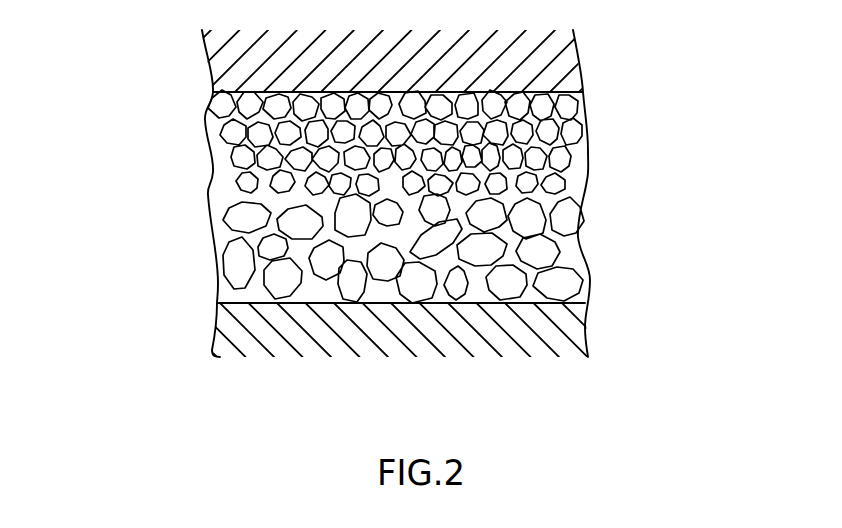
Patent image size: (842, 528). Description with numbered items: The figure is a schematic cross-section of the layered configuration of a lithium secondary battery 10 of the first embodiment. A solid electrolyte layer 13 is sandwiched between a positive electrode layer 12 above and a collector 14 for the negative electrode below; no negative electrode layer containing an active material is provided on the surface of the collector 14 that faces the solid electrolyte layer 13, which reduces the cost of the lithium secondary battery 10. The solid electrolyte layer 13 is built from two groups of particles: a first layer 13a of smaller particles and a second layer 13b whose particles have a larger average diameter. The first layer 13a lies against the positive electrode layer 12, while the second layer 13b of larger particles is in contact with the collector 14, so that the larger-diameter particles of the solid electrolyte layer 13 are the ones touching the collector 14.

The lithium secondary battery 10 is at (148, 295).
The positive electrode layer 12 is at (572, 55).
The solid electrolyte layer 13 is at (505, 196).
The first layer 13a is at (607, 95).
The second layer 13b is at (607, 203).
The collector 14 is at (562, 331).